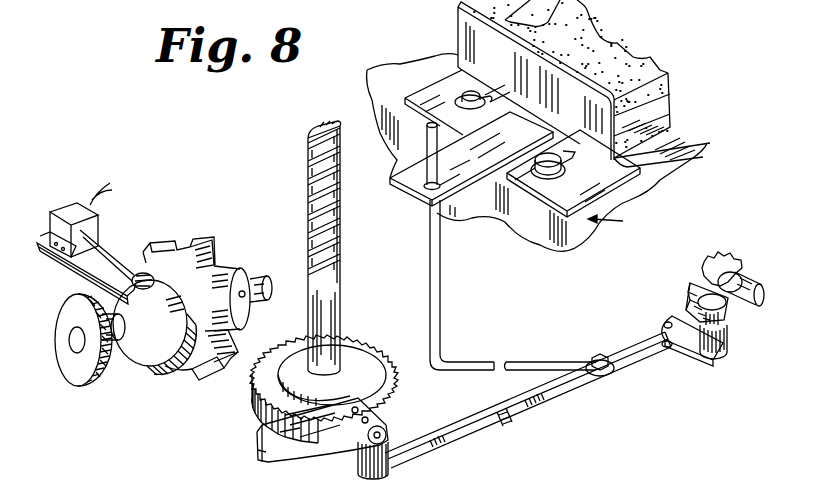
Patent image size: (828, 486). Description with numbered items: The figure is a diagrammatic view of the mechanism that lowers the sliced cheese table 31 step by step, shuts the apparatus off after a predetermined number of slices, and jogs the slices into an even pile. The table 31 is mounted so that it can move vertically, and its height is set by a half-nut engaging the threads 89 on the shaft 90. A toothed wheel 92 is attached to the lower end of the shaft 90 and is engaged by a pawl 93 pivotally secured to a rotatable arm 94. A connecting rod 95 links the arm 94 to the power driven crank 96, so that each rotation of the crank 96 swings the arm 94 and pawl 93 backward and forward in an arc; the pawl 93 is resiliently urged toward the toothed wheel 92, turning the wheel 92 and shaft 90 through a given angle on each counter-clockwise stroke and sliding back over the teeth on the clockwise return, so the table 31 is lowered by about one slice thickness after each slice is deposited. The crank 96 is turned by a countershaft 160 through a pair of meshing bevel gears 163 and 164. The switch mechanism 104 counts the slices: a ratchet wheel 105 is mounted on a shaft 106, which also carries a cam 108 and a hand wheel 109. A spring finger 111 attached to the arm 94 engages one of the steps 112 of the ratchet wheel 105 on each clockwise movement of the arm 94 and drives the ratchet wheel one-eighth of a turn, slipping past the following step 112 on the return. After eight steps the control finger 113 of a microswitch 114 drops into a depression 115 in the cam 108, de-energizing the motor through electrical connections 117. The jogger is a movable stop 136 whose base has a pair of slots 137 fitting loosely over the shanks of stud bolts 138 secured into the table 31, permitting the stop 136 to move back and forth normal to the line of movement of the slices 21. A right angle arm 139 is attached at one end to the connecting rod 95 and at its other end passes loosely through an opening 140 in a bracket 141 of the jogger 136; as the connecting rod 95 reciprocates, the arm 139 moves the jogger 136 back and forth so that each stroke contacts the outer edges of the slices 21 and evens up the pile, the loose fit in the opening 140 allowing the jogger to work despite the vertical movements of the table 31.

The slices 21 is at (674, 100).
The table 31 is at (618, 223).
The threads 89 is at (307, 168).
The shaft 90 is at (324, 323).
The toothed wheel 92 is at (364, 358).
The pawl 93 is at (388, 424).
The rotatable arm 94 is at (351, 392).
The connecting rod 95 is at (543, 410).
The power driven crank 96 is at (697, 352).
The switch mechanism 104 is at (174, 242).
The ratchet wheel 105 is at (233, 343).
The shaft 106 is at (261, 276).
The cam 108 is at (134, 348).
The hand wheel 109 is at (78, 367).
The spring finger 111 is at (288, 450).
The steps 112 is at (247, 433).
The control finger 113 is at (113, 255).
The microswitch 114 is at (64, 210).
The depression 115 is at (129, 290).
The electrical connections 117 is at (90, 205).
The stop 136 is at (456, 8).
The slots 137 is at (452, 108).
The stud bolts 138 is at (468, 94).
The right angle arm 139 is at (455, 364).
The opening 140 is at (451, 172).
The bracket 141 is at (428, 194).
The countershaft 160 is at (750, 282).
The bevel gear 163 is at (708, 262).
The bevel gear 164 is at (686, 293).